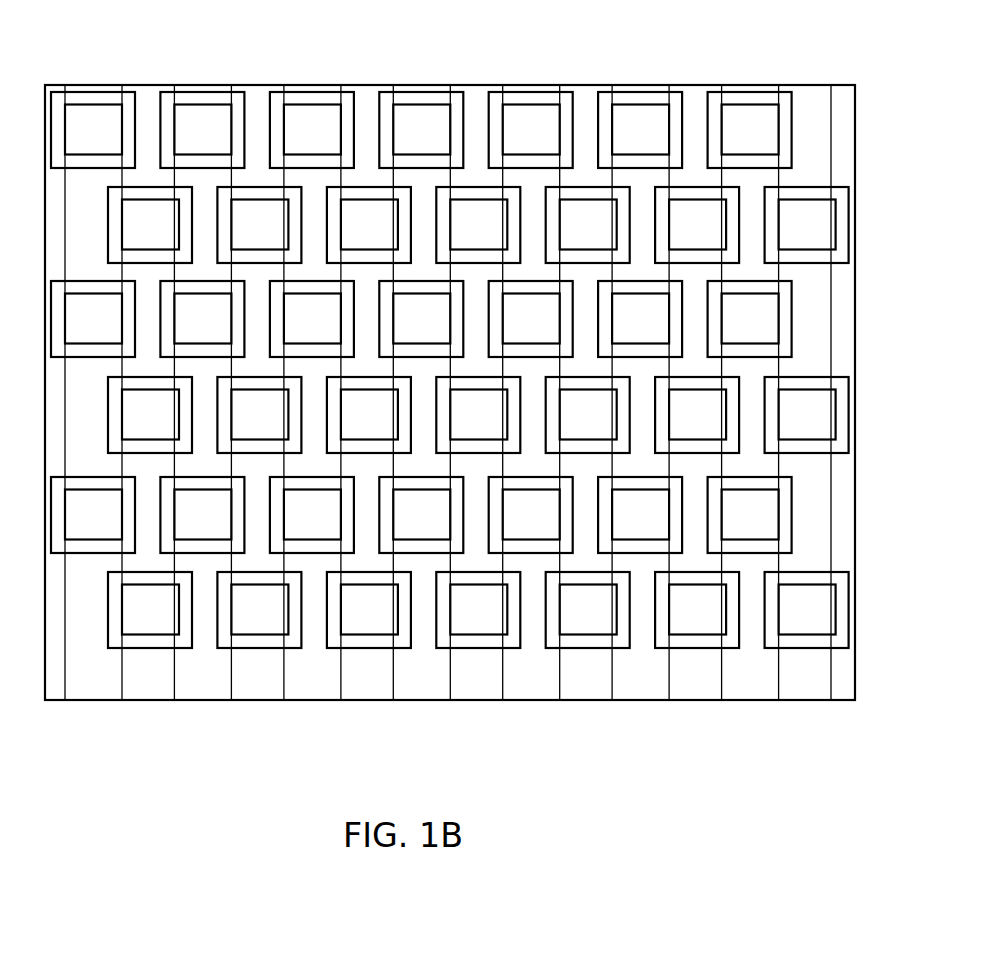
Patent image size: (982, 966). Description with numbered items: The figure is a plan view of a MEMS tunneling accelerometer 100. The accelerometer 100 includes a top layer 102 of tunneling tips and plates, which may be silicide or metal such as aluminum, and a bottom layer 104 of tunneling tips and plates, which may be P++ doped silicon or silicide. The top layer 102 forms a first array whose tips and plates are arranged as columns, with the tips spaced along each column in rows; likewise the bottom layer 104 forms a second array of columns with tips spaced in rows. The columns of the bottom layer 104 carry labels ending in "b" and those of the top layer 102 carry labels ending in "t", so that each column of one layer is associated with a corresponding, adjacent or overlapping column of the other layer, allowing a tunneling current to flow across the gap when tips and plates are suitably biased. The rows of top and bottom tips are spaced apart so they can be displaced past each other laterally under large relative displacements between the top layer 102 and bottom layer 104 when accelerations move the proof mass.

The MEMS tunneling accelerometer 100 is at (744, 57).
The top layer of tunneling tips and plates 102 is at (147, 78).
The bottom layer of tunneling tips and plates 104 is at (90, 80).